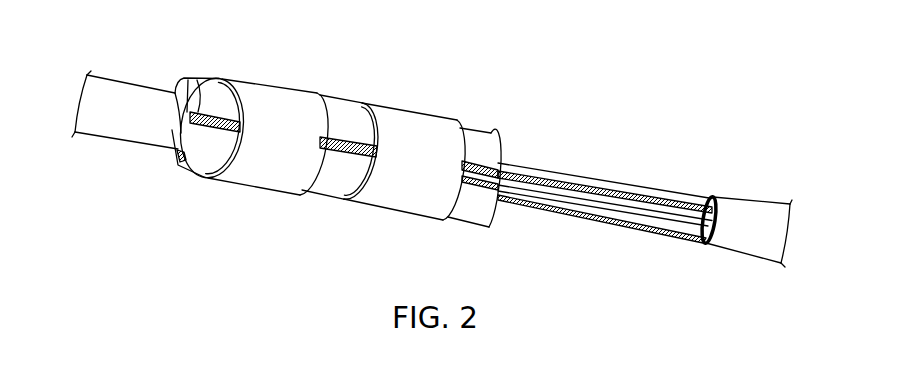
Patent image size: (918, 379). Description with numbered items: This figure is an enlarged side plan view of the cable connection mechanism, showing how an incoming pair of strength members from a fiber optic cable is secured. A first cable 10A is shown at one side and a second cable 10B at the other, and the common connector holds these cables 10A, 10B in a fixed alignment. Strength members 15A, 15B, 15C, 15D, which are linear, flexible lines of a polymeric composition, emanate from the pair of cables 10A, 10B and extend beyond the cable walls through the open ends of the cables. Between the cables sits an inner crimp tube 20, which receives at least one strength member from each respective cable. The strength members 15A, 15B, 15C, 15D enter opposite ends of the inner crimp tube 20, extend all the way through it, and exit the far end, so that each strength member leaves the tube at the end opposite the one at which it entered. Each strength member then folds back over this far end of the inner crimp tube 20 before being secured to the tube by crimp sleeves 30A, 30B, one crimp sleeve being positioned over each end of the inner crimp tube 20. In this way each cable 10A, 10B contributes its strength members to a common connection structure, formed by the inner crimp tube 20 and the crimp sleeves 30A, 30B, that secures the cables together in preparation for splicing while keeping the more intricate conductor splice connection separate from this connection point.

The first cable 10A is at (134, 116).
The second cable 10B is at (761, 240).
The strength member 15A is at (175, 93).
The strength member 15B is at (189, 90).
The strength member 15C is at (220, 90).
The strength member 15D is at (172, 148).
The inner crimp tube 20 is at (346, 200).
The crimp sleeve 30A is at (290, 149).
The crimp sleeve 30B is at (426, 170).